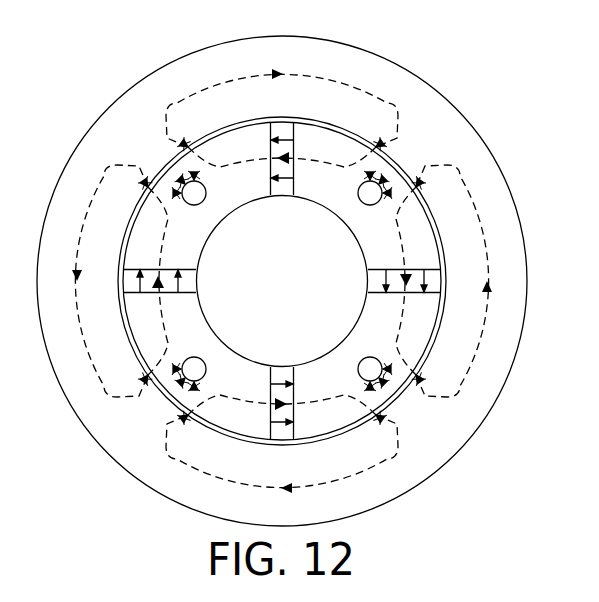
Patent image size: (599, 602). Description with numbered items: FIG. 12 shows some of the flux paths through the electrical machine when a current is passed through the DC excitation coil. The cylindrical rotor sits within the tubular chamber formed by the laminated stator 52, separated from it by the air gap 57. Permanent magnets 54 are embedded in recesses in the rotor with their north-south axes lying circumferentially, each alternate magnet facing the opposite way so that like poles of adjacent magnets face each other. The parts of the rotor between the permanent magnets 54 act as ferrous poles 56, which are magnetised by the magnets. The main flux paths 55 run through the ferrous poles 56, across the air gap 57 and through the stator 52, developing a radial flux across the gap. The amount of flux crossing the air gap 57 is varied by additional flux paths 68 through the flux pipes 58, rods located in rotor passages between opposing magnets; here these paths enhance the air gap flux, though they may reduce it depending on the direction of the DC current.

The stator 52 is at (132, 130).
The permanent magnets 54 is at (300, 132).
The flux paths 55 is at (460, 180).
The ferrous poles 56 is at (420, 330).
The air gap 57 is at (162, 393).
The flux pipes 58 is at (199, 357).
The additional flux paths 68 is at (381, 377).